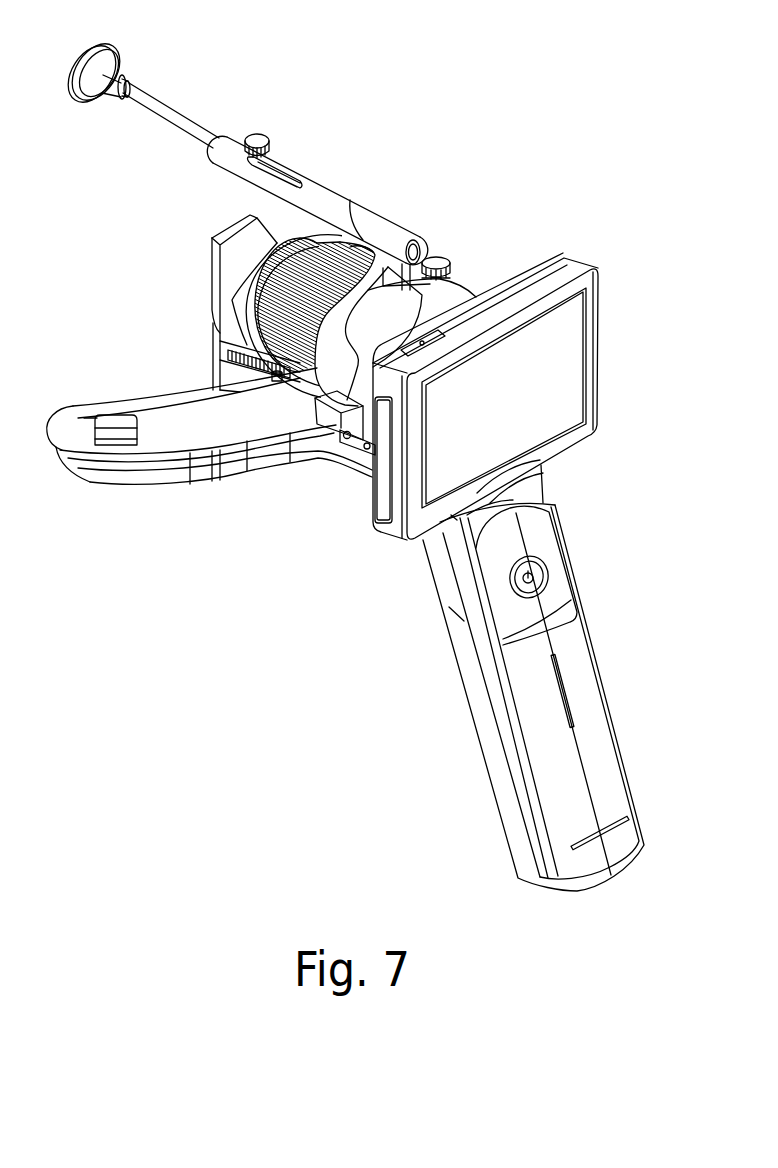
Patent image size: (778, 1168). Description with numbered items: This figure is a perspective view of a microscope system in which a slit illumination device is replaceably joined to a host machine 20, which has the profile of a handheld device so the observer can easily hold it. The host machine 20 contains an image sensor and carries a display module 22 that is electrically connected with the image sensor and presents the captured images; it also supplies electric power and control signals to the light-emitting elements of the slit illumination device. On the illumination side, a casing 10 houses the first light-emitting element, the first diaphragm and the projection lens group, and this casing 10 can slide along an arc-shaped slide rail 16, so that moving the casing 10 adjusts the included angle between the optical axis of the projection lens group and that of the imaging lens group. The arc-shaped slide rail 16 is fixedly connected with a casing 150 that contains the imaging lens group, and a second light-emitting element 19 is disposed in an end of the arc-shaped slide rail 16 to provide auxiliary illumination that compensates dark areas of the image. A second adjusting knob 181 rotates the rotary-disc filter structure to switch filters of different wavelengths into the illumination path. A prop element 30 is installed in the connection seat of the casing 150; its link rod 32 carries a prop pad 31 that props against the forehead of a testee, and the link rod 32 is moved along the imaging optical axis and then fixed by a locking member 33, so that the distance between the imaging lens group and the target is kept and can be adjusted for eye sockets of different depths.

The casing 10 is at (218, 283).
The arc-shaped slide rail 16 is at (238, 437).
The second light-emitting element 19 is at (113, 420).
The host machine 20 is at (592, 260).
The display module 22 is at (567, 373).
The prop element 30 is at (387, 232).
The prop pad 31 is at (100, 53).
The link rod 32 is at (160, 108).
The locking member 33 is at (260, 138).
The casing 150 is at (337, 433).
The second adjusting knob 181 is at (237, 355).